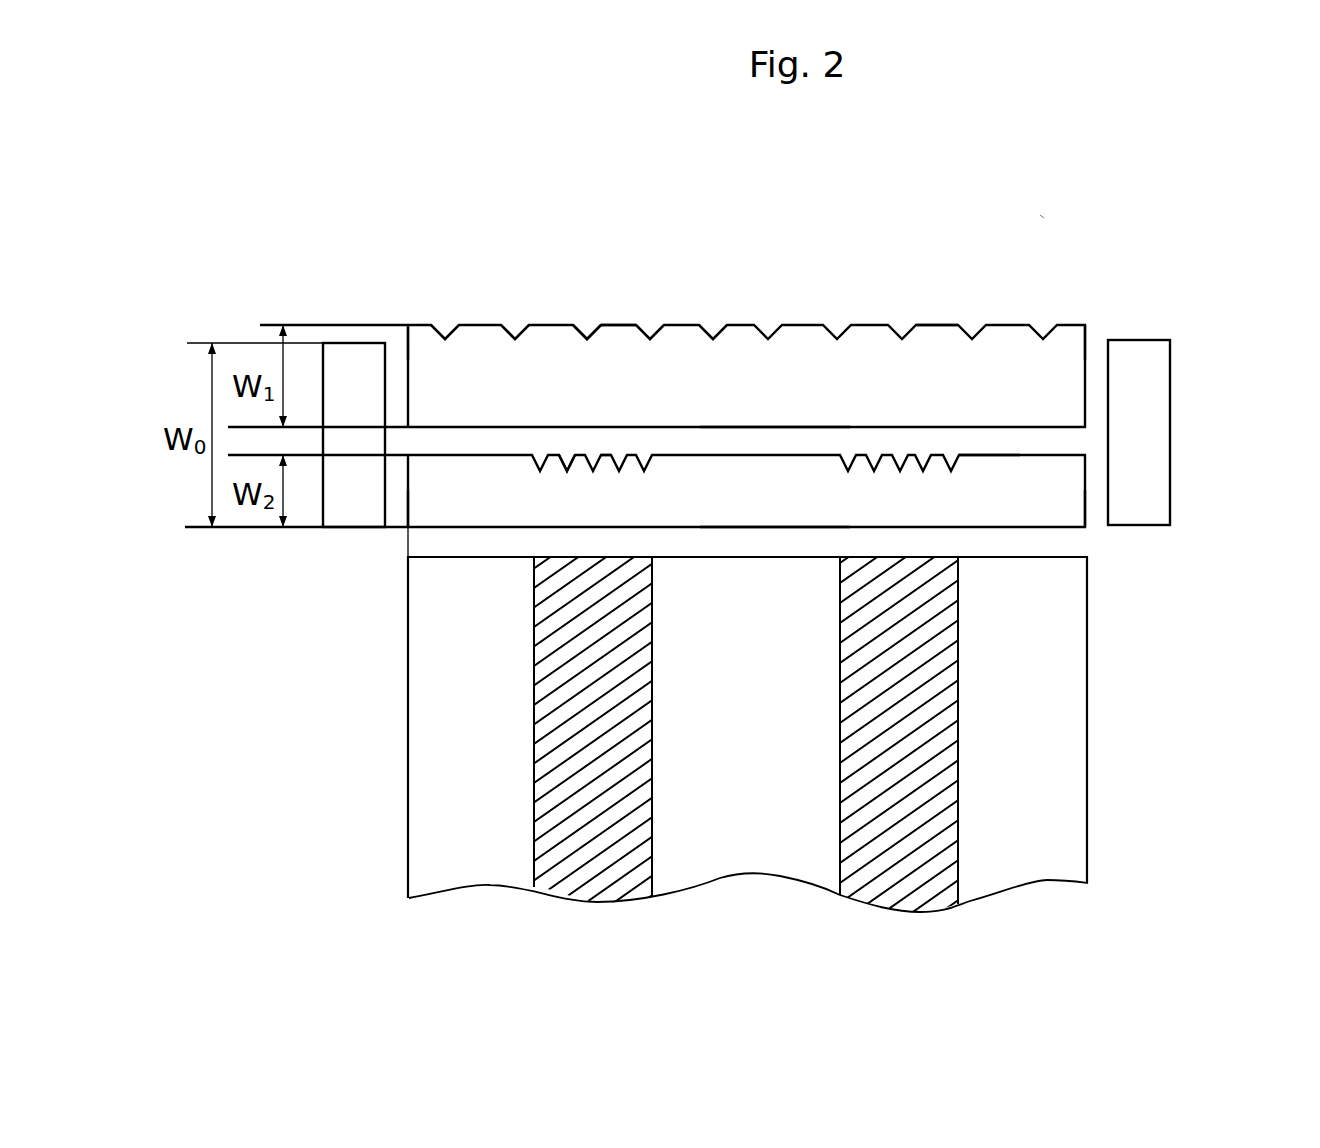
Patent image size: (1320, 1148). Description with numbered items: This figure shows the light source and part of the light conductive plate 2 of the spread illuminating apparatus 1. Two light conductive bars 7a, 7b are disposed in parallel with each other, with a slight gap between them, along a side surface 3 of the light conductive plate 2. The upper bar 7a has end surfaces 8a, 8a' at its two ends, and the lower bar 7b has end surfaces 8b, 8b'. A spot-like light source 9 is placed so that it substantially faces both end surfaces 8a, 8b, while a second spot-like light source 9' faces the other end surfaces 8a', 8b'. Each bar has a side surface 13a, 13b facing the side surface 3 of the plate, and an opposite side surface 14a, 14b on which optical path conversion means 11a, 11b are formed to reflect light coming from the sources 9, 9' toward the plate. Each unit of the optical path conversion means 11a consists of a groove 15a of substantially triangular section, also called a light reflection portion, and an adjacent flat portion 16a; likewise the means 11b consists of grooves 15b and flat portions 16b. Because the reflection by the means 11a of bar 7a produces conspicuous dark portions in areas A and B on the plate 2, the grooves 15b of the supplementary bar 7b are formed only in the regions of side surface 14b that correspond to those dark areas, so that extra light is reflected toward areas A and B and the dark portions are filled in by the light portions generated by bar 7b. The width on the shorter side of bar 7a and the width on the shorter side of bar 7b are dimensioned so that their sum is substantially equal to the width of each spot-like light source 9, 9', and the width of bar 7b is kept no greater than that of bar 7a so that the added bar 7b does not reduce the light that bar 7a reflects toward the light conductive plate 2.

The spread illuminating apparatus 1 is at (1060, 204).
The light conductive plate 2 is at (1068, 767).
The side surface 3 is at (433, 553).
The light conductive bar 7a is at (1068, 336).
The light conductive bar 7b is at (1053, 515).
The end surface 8a is at (1136, 298).
The end surface 8a' is at (371, 302).
The end surface 8b is at (1139, 542).
The end surface 8b' is at (362, 547).
The spot-like light source 9 is at (1180, 432).
The spot-like light source 9' is at (328, 380).
The optical path conversion means 11a is at (757, 199).
The optical path conversion means 11b is at (577, 200).
The side surface 13a is at (753, 427).
The side surface 13b is at (787, 527).
The side surface 14a is at (928, 325).
The side surface 14b is at (988, 453).
The groove 15a is at (592, 332).
The flat portion 16a is at (633, 322).
The groove 15b is at (568, 452).
The flat portion 16b is at (607, 452).